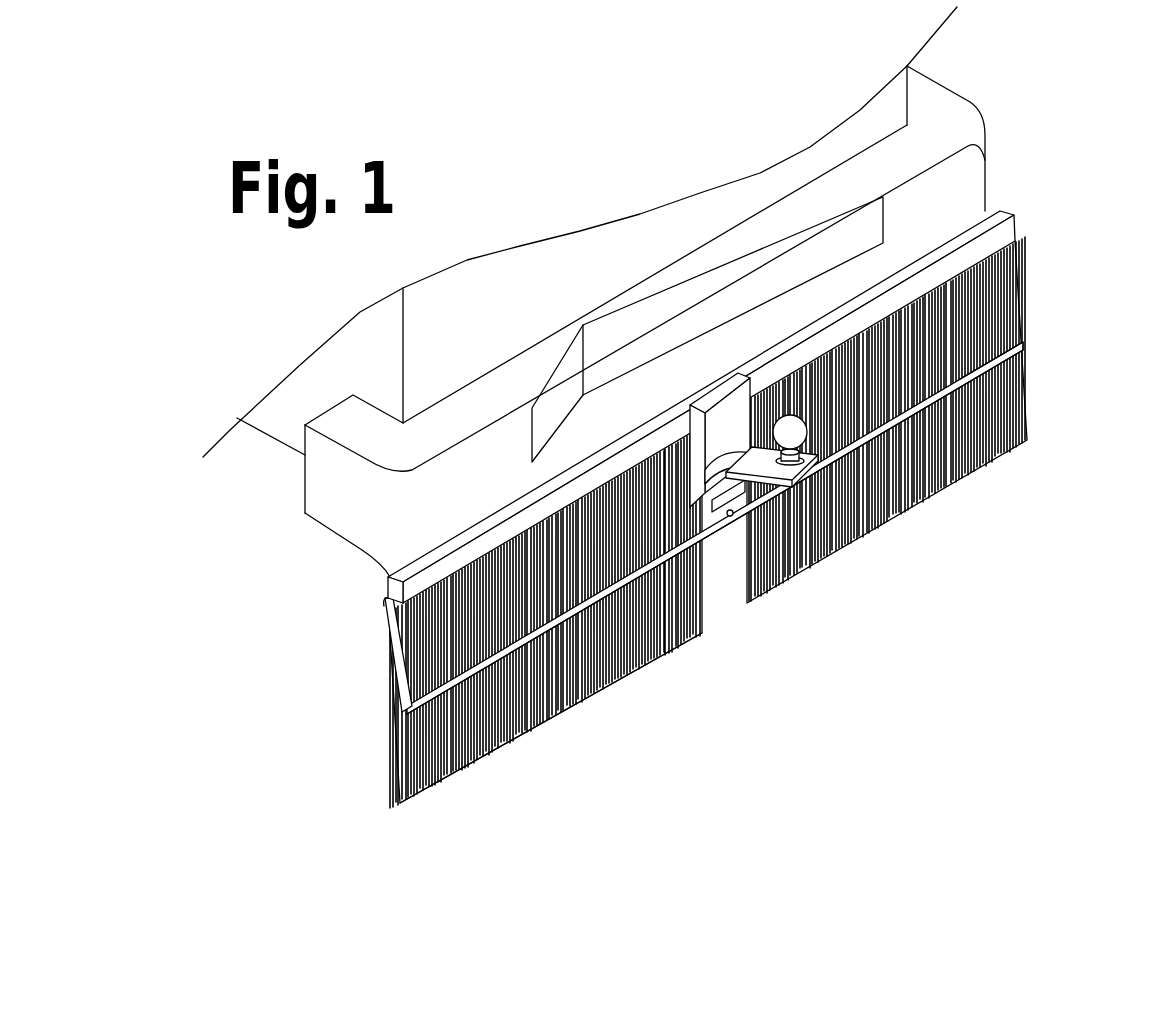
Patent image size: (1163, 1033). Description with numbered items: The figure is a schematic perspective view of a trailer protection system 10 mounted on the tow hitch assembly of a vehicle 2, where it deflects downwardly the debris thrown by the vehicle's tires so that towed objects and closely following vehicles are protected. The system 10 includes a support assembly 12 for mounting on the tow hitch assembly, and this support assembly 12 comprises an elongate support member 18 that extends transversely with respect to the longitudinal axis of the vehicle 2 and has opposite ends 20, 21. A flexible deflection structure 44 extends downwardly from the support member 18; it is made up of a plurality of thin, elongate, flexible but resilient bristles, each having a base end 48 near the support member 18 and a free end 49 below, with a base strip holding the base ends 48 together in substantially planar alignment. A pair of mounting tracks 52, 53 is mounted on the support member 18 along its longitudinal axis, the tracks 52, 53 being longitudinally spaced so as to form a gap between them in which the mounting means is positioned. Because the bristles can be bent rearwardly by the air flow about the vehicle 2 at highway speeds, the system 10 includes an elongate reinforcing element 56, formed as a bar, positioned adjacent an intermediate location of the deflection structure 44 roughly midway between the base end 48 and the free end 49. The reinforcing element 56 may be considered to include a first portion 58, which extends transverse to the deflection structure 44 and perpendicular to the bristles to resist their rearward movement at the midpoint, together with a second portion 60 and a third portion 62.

The vehicle 2 is at (880, 113).
The system 10 is at (947, 557).
The support assembly 12 is at (997, 201).
The elongate support member 18 is at (403, 561).
The end of support member 20 is at (433, 572).
The end of support member 21 is at (1017, 222).
The flexible deflection structure 44 is at (387, 740).
The base end 48 is at (387, 600).
The free end 49 is at (508, 743).
The mounting track 52 is at (477, 767).
The mounting track 53 is at (1023, 393).
The elongate reinforcing element 56 is at (678, 645).
The first portion 58 is at (568, 712).
The second portion 60 is at (392, 672).
The third portion 62 is at (1024, 338).